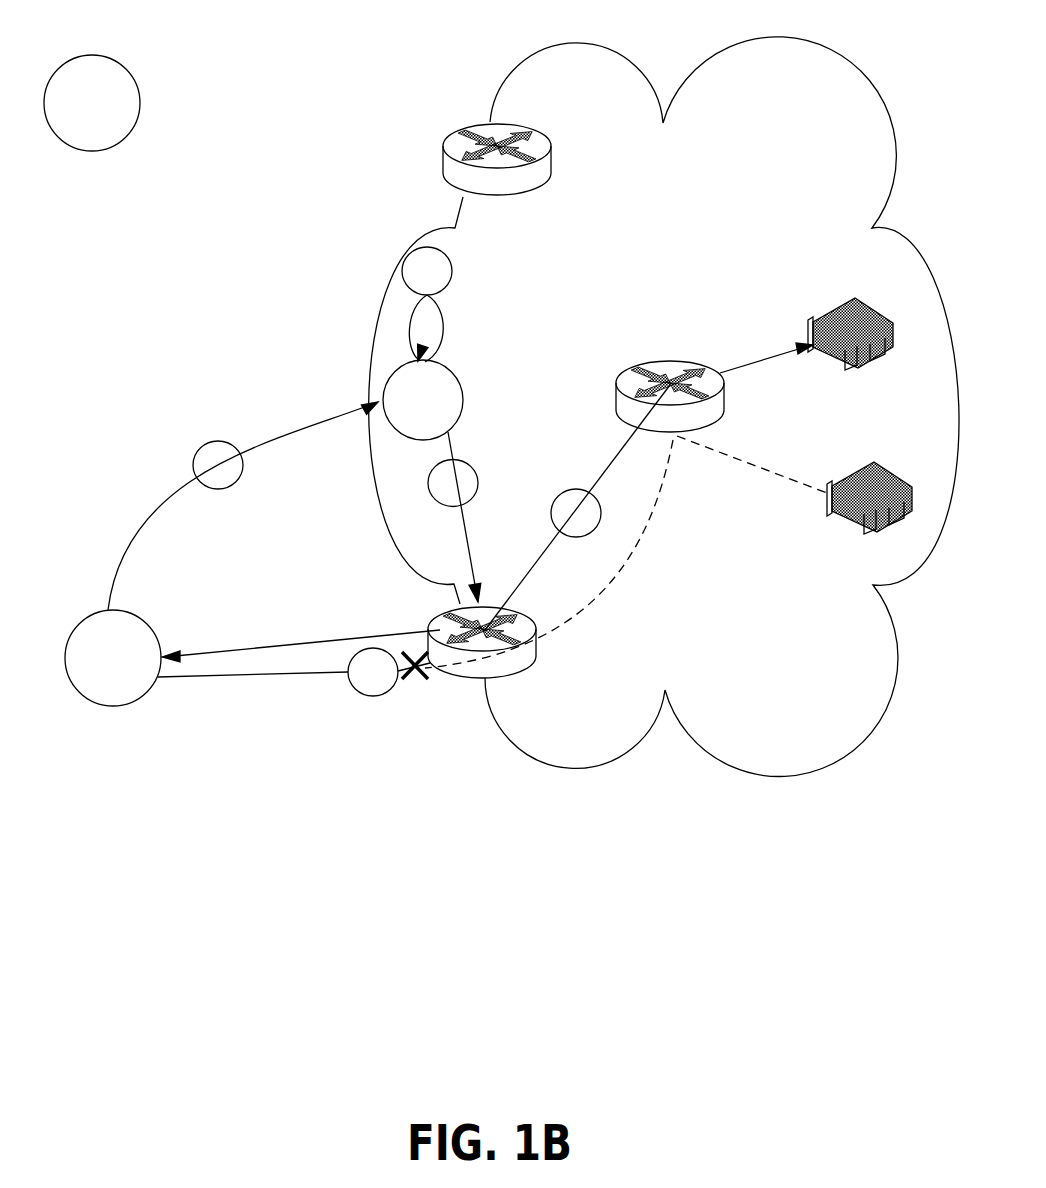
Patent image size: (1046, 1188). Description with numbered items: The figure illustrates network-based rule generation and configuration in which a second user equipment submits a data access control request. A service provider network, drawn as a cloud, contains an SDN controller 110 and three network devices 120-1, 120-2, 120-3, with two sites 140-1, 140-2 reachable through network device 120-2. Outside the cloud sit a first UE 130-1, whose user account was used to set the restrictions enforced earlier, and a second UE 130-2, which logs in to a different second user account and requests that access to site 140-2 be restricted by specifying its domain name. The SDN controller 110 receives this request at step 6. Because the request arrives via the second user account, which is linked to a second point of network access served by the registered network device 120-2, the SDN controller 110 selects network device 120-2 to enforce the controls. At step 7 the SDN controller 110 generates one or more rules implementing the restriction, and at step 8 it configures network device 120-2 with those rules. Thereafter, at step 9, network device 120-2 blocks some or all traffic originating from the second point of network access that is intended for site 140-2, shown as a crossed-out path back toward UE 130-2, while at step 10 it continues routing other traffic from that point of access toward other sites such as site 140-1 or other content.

The SDN controller 110 is at (407, 410).
The network device 120-1 is at (543, 133).
The network device 120-2 is at (670, 360).
The network device 120-3 is at (525, 676).
The user equipment 130-1 is at (66, 114).
The second UE 130-2 is at (87, 669).
The site 140-1 is at (826, 407).
The site 140-2 is at (844, 568).
The receiving step 6 is at (243, 506).
The rule generation step 7 is at (427, 304).
The configuration step 8 is at (454, 517).
The blocking step 9 is at (299, 663).
The routing step 10 is at (549, 526).